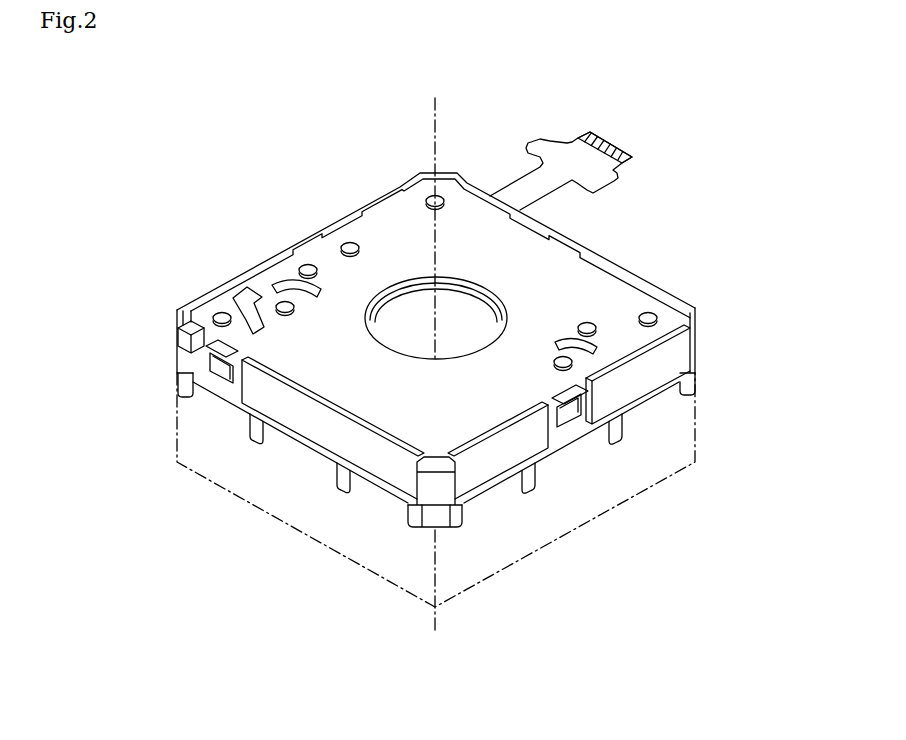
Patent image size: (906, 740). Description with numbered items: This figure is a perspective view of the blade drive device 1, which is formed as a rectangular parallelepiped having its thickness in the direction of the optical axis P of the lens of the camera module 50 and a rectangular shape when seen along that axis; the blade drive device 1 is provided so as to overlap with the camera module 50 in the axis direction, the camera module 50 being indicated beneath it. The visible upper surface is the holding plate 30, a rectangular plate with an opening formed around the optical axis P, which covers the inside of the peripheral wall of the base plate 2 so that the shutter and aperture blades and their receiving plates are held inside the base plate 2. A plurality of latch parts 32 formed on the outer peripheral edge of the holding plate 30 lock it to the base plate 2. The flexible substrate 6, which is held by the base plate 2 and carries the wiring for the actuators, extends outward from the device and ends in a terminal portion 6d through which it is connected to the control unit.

The blade drive device 1 is at (238, 196).
The base plate 2 is at (164, 342).
The holding plate 30 is at (387, 225).
The latch parts 32 is at (222, 372).
The flexible substrate 6 is at (549, 143).
The terminal portion 6d is at (611, 142).
The optical axis P is at (432, 120).
The camera module 50 is at (698, 425).